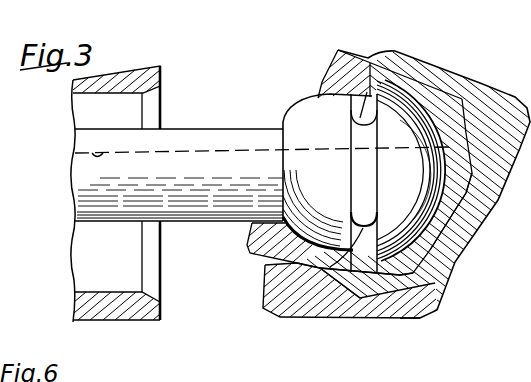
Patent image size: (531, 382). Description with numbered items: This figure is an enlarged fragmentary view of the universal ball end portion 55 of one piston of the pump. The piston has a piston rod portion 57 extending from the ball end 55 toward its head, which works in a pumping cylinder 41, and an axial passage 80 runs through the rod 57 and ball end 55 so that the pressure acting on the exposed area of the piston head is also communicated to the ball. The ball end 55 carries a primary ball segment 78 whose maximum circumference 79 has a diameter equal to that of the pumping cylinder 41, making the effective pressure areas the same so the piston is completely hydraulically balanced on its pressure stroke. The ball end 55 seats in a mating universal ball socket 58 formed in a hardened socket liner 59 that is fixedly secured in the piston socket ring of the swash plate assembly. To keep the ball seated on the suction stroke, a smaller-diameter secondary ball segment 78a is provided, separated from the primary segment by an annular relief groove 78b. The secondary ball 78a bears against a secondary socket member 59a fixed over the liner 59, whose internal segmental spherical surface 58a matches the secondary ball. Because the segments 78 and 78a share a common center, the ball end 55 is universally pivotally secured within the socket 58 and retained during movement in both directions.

The pumping cylinder 41 is at (112, 280).
The universal ball end portion 55 is at (308, 93).
The piston rod portion 57 is at (199, 231).
The universal ball socket 58 is at (361, 266).
The internal segmental spherical surface 58a is at (424, 68).
The socket liner 59 is at (467, 173).
The secondary socket member 59a is at (255, 256).
The primary ball segment 78 is at (489, 83).
The secondary ball segment 78a is at (264, 285).
The annular relief groove 78b is at (280, 302).
The maximum circumference 79 is at (460, 233).
The axial passage 80 is at (76, 149).